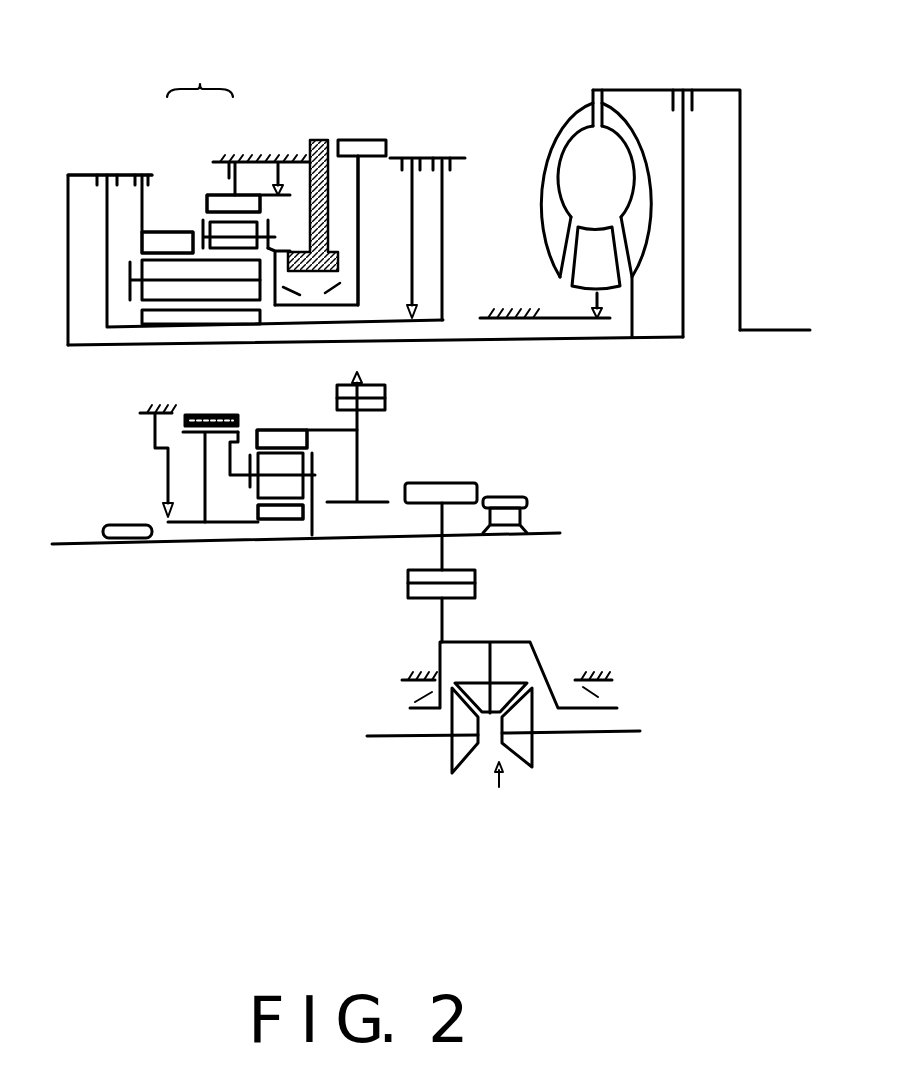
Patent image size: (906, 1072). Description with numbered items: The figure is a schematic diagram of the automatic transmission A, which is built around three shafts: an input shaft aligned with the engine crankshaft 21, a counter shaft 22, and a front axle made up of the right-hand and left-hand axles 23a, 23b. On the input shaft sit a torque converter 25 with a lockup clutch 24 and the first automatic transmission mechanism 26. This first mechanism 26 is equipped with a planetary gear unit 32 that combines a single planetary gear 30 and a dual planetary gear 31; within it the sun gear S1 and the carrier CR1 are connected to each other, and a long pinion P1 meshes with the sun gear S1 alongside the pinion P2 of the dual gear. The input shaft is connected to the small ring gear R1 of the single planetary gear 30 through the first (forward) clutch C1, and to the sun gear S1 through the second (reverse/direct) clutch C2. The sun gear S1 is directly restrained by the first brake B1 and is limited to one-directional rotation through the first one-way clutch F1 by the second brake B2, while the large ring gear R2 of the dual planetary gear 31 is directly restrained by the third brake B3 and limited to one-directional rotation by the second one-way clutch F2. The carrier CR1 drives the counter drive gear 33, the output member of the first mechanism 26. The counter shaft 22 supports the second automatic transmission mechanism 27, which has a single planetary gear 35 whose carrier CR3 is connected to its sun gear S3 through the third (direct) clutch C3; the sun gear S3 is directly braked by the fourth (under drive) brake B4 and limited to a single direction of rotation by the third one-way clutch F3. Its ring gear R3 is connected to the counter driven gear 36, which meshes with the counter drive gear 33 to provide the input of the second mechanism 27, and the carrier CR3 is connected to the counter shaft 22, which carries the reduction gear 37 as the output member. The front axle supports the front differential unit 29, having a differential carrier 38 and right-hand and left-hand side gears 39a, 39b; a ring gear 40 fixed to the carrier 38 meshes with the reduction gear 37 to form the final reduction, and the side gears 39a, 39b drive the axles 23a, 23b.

The automatic transmission A is at (138, 92).
The engine crankshaft 21 is at (772, 330).
The counter shaft 22 is at (183, 543).
The right-hand axle 23a is at (405, 745).
The left-hand axle 23b is at (613, 733).
The lockup clutch 24 is at (697, 90).
The torque converter 25 is at (578, 95).
The first automatic transmission mechanism 26 is at (77, 157).
The second automatic transmission mechanism 27 is at (152, 458).
The front differential unit 29 is at (499, 794).
The single planetary gear 30 is at (158, 228).
The dual planetary gear 31 is at (212, 190).
The planetary gear unit 32 is at (200, 78).
The counter drive gear 33 is at (365, 138).
The single planetary gear 35 is at (286, 425).
The counter driven gear 36 is at (392, 402).
The reduction gear 37 is at (452, 483).
The differential carrier 38 is at (512, 628).
The right-hand side gear 39a is at (463, 768).
The left-hand side gear 39b is at (523, 767).
The ring gear 40 is at (413, 593).
The first clutch C1 is at (143, 186).
The second clutch C2 is at (265, 234).
The third clutch C3 is at (217, 443).
The first brake B1 is at (448, 225).
The second brake B2 is at (427, 224).
The third brake B3 is at (261, 162).
The fourth brake B4 is at (210, 453).
The first one-way clutch F1 is at (334, 222).
The second one-way clutch F2 is at (281, 152).
The third one-way clutch F3 is at (127, 514).
The ring gear R1 is at (153, 246).
The long pinion P1 is at (140, 303).
The sun gear S1 is at (203, 316).
The carrier CR1 is at (265, 302).
The ring gear R2 is at (260, 207).
The second pinion gear P2 is at (255, 235).
The ring gear R3 is at (300, 437).
The sun gear S3 is at (272, 515).
The carrier CR3 is at (318, 483).